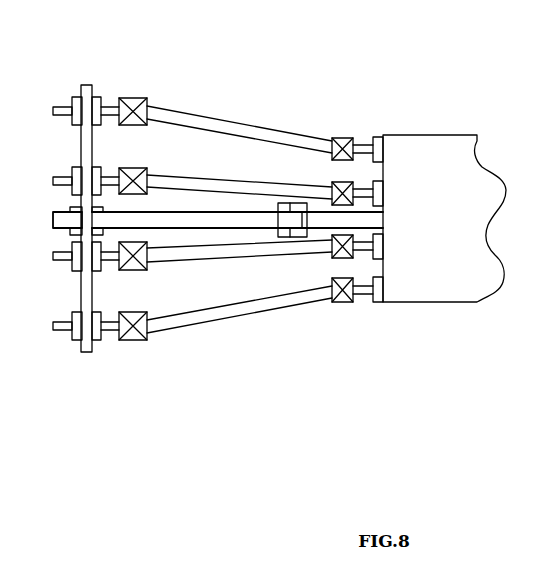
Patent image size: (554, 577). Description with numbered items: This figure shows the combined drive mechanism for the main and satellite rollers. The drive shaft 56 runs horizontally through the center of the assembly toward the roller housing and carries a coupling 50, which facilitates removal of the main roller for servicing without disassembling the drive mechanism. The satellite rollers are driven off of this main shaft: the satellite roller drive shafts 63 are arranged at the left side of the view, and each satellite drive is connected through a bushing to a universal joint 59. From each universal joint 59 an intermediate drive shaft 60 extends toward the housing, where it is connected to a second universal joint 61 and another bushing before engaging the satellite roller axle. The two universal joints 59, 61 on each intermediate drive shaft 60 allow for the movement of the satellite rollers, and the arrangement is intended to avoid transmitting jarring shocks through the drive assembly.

The coupling 50 is at (284, 200).
The drive shaft 56 is at (214, 204).
The universal joint 59 is at (144, 92).
The intermediate drive shaft 60 is at (209, 112).
The second universal joint 61 is at (348, 132).
The satellite roller drive shafts 63 is at (72, 150).